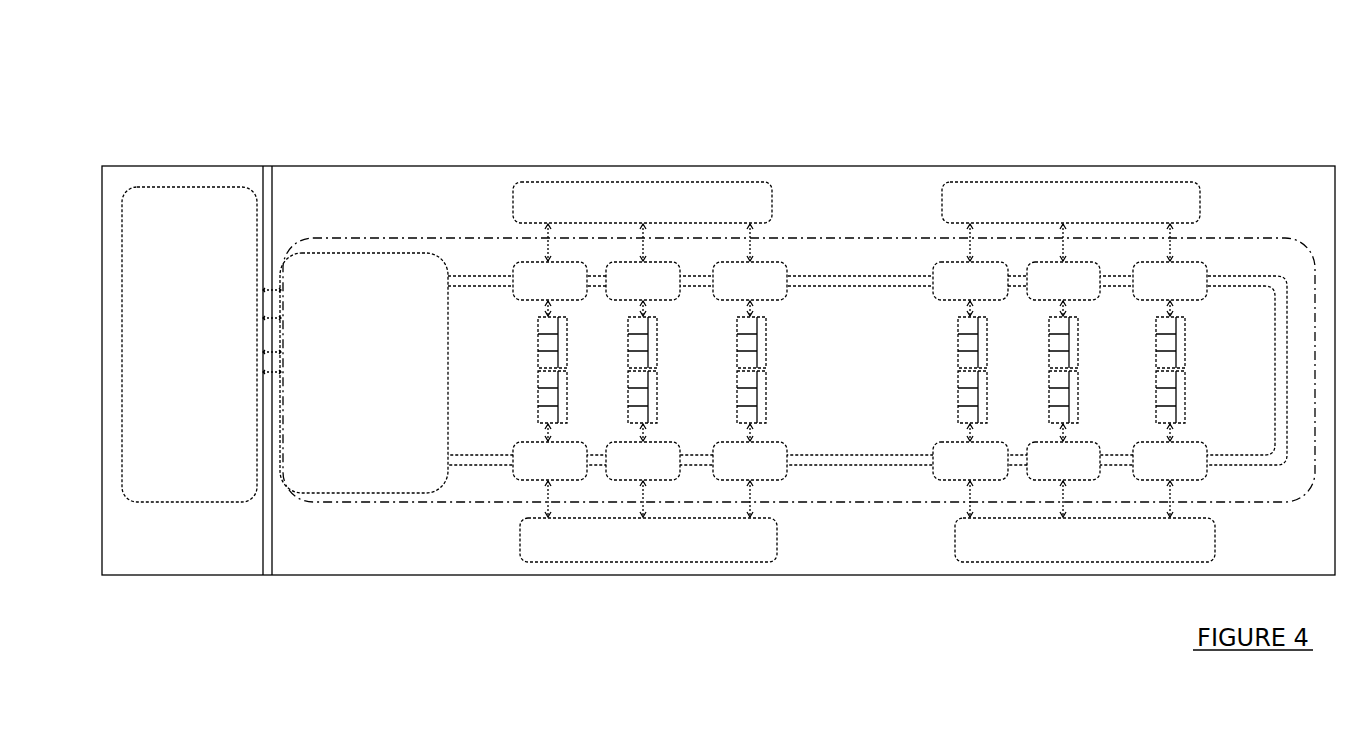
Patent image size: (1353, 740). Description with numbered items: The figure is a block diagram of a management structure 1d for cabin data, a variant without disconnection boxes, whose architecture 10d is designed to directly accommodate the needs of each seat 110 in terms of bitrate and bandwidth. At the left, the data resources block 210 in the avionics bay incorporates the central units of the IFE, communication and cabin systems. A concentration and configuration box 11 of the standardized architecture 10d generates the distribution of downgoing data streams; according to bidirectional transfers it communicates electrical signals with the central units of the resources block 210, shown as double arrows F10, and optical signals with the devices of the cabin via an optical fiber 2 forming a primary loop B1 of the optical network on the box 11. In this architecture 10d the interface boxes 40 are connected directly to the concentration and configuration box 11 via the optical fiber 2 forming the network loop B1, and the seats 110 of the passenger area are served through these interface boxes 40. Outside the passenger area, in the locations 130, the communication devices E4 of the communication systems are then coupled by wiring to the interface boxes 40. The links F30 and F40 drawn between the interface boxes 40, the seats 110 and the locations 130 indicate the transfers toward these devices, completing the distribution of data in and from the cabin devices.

The management structure 1d is at (842, 146).
The architecture 10d is at (455, 238).
The data resources block 210 is at (182, 502).
The double arrows F10 is at (264, 380).
The concentration and configuration box 11 is at (352, 493).
The optical fiber 2 is at (819, 462).
The interface boxes 40 is at (622, 262).
The locations 130 is at (631, 182).
The communication system devices E4 is at (728, 202).
The seats 110 is at (541, 355).
The primary loop B1 is at (870, 480).
The battery link F30 is at (549, 428).
The load link F40 is at (550, 487).